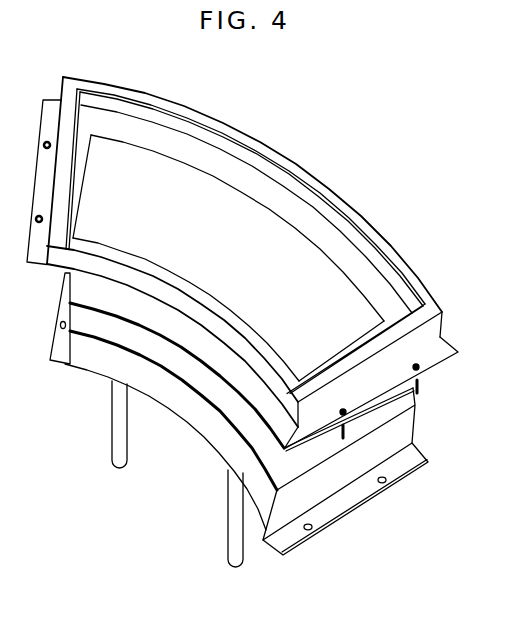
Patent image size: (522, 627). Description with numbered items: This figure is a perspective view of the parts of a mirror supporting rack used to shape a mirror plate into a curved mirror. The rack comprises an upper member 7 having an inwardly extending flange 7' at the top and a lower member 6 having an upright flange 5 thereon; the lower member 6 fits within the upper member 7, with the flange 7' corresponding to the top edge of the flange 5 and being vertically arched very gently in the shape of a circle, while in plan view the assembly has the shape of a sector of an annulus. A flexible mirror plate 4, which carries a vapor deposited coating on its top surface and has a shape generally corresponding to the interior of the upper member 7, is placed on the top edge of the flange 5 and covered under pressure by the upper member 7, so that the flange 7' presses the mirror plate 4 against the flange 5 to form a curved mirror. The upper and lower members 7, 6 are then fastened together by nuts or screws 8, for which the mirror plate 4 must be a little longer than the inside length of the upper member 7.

The flexible mirror plate 4 is at (340, 283).
The upright flange 5 is at (107, 363).
The lower member 6 is at (227, 452).
The upper member 7 is at (252, 195).
The inwardly extending flange 7' is at (245, 221).
The nuts or screws 8 is at (422, 387).